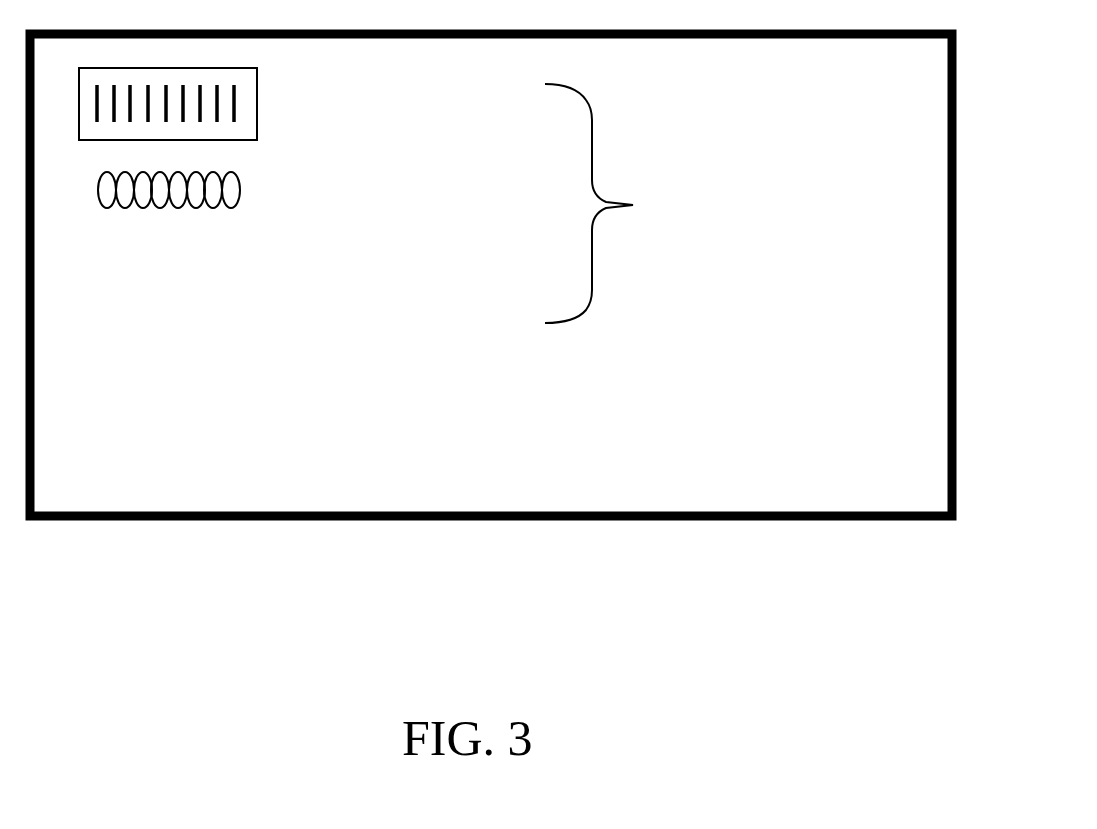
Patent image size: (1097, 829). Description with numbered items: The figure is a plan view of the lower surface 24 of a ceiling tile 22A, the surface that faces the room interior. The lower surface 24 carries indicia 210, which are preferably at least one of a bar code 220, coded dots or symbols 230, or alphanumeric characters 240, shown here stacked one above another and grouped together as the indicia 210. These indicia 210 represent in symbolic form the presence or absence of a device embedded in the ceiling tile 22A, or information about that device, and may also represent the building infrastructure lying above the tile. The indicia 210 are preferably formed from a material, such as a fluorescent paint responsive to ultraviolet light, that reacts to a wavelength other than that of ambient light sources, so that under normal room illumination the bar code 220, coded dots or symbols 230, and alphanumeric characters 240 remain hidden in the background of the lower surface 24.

The ceiling tile 22A is at (953, 110).
The lower surface 24 is at (887, 490).
The indicia 210 is at (624, 203).
The bar code 220 is at (285, 102).
The coded dots or symbols 230 is at (285, 190).
The alphanumeric characters 240 is at (285, 310).